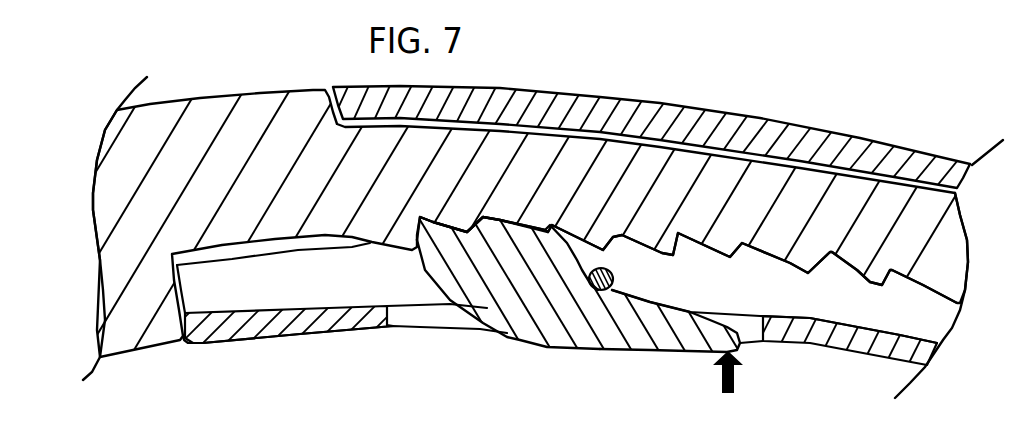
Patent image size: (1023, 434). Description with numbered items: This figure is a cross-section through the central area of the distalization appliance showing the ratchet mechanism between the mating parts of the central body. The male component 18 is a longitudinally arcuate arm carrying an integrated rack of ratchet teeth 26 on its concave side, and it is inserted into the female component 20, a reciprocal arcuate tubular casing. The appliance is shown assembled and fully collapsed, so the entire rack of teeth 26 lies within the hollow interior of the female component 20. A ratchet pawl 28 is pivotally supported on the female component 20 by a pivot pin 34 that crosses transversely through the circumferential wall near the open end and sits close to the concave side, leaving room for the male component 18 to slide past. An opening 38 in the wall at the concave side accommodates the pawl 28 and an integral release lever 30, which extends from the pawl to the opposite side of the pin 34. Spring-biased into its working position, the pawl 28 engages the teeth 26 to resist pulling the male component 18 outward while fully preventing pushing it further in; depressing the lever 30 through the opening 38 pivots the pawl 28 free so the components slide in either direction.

The male component 18 is at (763, 183).
The female component 20 is at (607, 108).
The rack of ratchet teeth 26 is at (742, 252).
The ratchet pawl 28 is at (487, 303).
The release lever 30 is at (677, 343).
The pivot pin 34 is at (614, 278).
The opening 38 is at (413, 318).